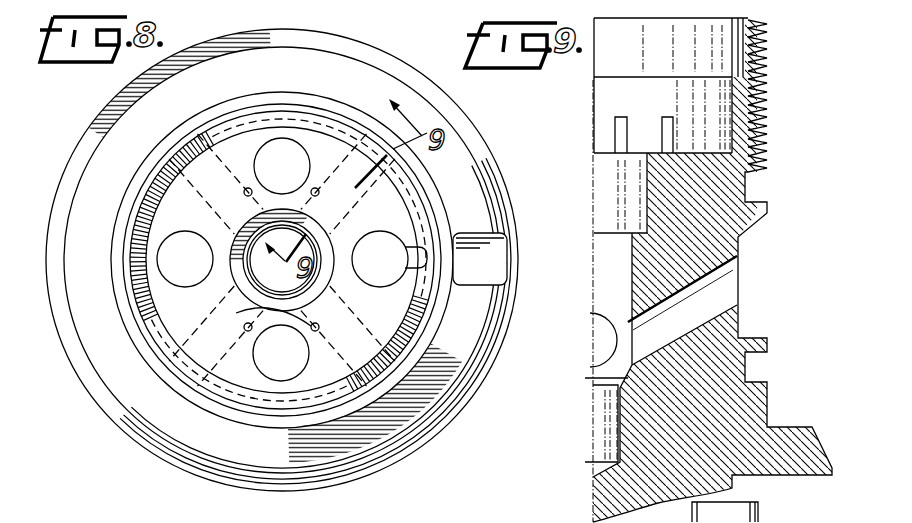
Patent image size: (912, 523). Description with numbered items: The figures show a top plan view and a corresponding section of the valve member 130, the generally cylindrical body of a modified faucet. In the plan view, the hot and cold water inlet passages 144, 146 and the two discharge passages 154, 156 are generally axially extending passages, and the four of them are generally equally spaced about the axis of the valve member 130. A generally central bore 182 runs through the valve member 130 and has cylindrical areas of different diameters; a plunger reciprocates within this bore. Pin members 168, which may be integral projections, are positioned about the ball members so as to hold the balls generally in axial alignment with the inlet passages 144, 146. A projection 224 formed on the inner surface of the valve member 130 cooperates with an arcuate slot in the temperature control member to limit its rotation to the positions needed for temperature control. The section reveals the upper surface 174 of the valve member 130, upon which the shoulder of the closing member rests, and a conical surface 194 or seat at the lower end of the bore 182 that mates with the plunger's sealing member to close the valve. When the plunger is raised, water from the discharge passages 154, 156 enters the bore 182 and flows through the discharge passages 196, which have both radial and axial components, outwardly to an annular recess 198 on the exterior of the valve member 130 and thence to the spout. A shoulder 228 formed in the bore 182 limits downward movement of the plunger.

In FIG. 8, the valve member 130 is at (125, 436).
In FIG. 9, the valve member 130 is at (775, 401).
In FIG. 8, the hot water inlet passage 144 is at (272, 143).
In FIG. 8, the cold water inlet passage 146 is at (265, 366).
In FIG. 8, the discharge passage 154 is at (176, 281).
In FIG. 8, the discharge passage 156 is at (392, 252).
In FIG. 8, the pin members 168 is at (240, 328).
In FIG. 9, the pin members 168 is at (667, 117).
In FIG. 9, the upper surface 174 is at (752, 15).
In FIG. 8, the central bore 182 is at (242, 222).
In FIG. 9, the central bore 182 is at (605, 277).
In FIG. 8, the conical surface 194 is at (303, 283).
In FIG. 9, the conical surface 194 is at (618, 368).
In FIG. 8, the discharge passages 196 is at (173, 380).
In FIG. 9, the discharge passages 196 is at (725, 296).
In FIG. 9, the annular recess 198 is at (742, 236).
In FIG. 8, the projection 224 is at (488, 238).
In FIG. 8, the shoulder 228 is at (242, 229).